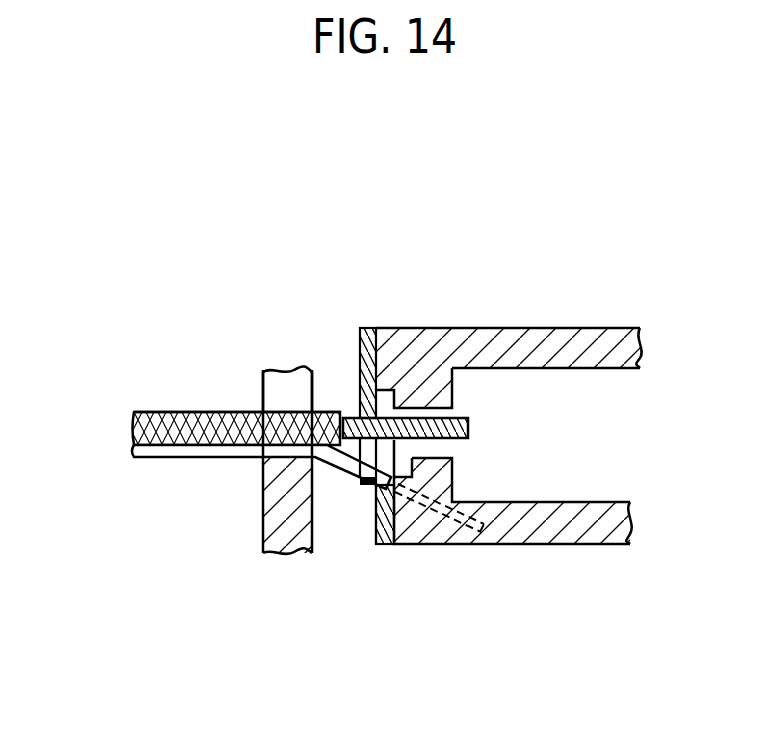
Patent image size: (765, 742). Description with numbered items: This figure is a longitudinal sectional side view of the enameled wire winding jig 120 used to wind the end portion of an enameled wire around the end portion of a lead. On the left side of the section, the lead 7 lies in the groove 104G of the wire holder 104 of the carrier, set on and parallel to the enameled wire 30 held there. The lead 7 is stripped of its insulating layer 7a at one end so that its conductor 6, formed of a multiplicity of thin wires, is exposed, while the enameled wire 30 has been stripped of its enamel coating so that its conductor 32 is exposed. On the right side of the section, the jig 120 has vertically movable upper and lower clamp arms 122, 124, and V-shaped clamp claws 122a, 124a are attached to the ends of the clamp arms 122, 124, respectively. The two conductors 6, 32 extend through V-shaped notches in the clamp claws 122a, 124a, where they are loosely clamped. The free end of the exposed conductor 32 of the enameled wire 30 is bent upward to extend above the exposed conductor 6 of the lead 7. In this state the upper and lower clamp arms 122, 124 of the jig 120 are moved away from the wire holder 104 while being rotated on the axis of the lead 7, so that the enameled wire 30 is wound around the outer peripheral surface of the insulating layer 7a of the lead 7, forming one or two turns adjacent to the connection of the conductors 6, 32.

The conductor 6 is at (468, 428).
The lead 7 is at (135, 403).
The insulating layer 7a is at (168, 418).
The enameled wire 30 is at (163, 458).
The conductor 32 is at (472, 548).
The wire holder 104 is at (263, 508).
The groove 104G is at (270, 388).
The enameled wire winding jig 120 is at (479, 326).
The upper clamp arm 122 is at (592, 338).
The clamp claw 122a is at (368, 330).
The lower clamp arm 124 is at (588, 528).
The clamp claw 124a is at (383, 537).